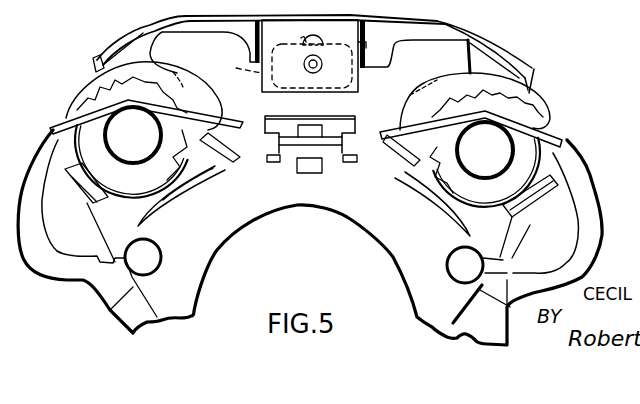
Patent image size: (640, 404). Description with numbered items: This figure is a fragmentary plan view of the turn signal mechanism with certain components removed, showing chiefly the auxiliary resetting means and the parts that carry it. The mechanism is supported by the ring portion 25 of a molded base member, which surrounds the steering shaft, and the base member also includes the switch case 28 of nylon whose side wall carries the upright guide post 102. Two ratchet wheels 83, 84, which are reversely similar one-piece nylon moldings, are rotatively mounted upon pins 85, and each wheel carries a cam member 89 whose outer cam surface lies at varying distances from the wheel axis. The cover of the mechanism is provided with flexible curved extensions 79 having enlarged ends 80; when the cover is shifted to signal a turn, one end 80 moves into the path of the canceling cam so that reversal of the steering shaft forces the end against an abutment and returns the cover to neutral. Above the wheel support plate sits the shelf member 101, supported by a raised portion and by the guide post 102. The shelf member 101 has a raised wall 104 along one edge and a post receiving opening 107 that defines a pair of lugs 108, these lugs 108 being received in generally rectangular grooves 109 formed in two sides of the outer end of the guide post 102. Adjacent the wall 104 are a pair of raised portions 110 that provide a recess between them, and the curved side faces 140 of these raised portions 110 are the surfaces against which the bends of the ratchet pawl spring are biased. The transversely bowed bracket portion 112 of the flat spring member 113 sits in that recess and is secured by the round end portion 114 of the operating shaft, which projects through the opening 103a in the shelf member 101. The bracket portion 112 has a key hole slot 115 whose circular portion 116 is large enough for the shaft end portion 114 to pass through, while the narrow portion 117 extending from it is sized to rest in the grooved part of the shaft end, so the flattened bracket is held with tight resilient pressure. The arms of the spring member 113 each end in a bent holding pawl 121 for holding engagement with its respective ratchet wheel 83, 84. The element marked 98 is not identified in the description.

The ring portion 25 is at (400, 260).
The switch case 28 is at (193, 206).
The flexible curved extensions 79 is at (32, 223).
The enlarged ends 80 is at (133, 333).
The ratchet wheel 83 is at (123, 175).
The ratchet wheel 84 is at (507, 188).
The pins 85 is at (133, 142).
The cam member 89 is at (207, 112).
The band 98 is at (93, 123).
The shelf member 101 is at (162, 43).
The guide post 102 is at (317, 150).
The opening 103a is at (230, 63).
The raised wall 104 is at (335, 15).
The post receiving opening 107 is at (355, 115).
The lugs 108 is at (267, 143).
The grooves 109 is at (280, 162).
The raised portions 110 is at (253, 38).
The bracket portion 112 is at (360, 85).
The spring member 113 is at (437, 20).
The round end portion 114 is at (318, 66).
The key hole slot 115 is at (324, 38).
The circular portion 116 is at (303, 34).
The narrow portion 117 is at (374, 38).
The holding pawl 121 is at (533, 68).
The curved side faces 140 is at (310, 52).